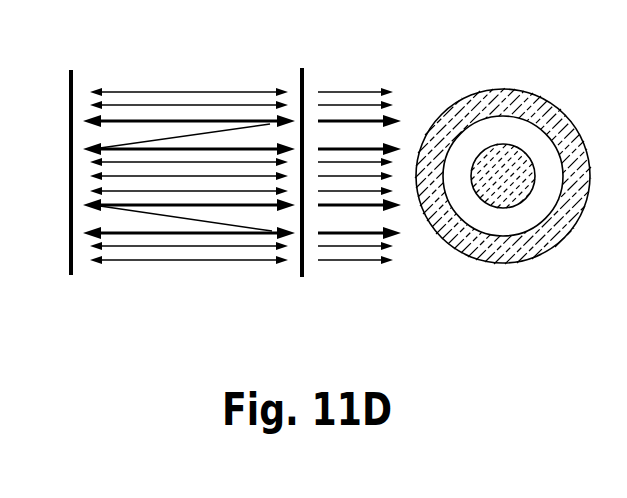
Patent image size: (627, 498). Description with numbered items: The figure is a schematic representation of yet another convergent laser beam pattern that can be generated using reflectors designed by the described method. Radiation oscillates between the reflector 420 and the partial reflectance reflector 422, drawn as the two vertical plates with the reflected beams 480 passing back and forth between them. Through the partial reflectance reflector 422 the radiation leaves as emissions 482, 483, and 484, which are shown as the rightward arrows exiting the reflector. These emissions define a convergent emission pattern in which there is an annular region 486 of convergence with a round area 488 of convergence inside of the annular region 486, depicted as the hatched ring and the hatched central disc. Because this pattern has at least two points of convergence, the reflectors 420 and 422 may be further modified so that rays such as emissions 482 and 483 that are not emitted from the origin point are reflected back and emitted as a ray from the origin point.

The reflector 420 is at (73, 78).
The partial reflectance reflector 422 is at (300, 85).
The reflected light beams 480 is at (187, 261).
The emission 482 is at (348, 90).
The emission 483 is at (340, 233).
The emission 484 is at (372, 149).
The annular region of convergence 486 is at (553, 104).
The round area of convergence 488 is at (497, 147).